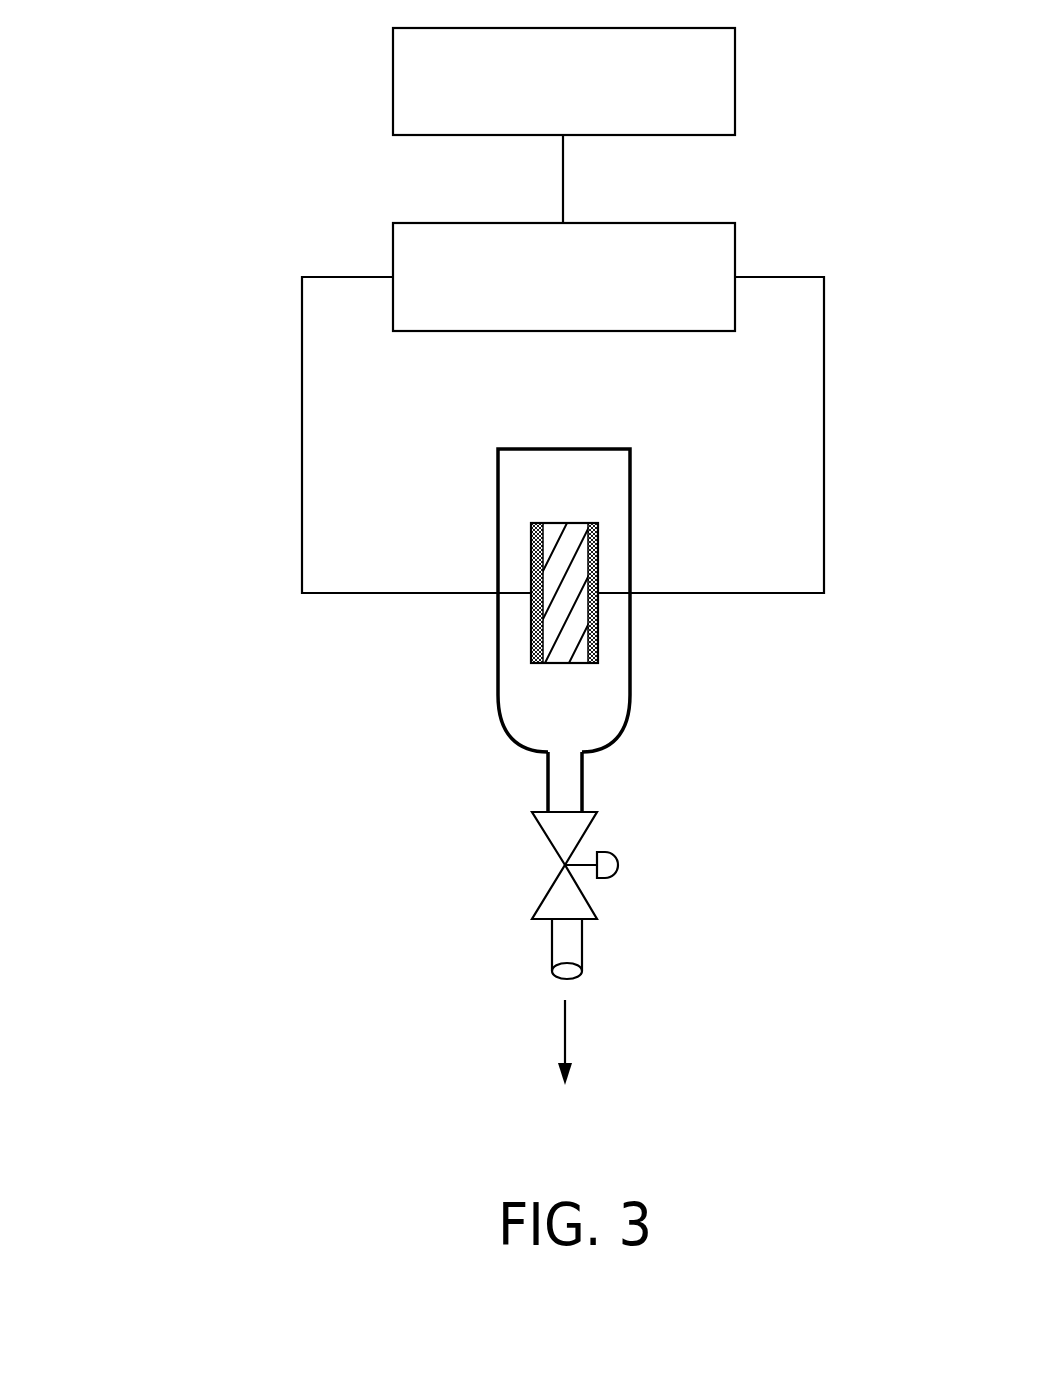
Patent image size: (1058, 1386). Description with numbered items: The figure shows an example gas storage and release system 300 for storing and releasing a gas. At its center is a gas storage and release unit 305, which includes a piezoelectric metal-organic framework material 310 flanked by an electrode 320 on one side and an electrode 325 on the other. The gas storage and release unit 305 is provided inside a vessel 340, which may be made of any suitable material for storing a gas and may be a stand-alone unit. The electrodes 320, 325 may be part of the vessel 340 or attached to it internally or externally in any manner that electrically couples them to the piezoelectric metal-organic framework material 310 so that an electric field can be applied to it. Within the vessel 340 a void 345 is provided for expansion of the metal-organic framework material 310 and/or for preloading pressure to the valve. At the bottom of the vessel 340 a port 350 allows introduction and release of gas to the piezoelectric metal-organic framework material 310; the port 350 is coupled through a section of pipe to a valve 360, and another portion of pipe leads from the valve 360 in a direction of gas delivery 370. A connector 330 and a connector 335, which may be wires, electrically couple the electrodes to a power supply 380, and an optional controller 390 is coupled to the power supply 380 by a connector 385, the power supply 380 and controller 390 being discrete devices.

The gas storage and release system 300 is at (178, 143).
The gas storage and release unit 305 is at (528, 494).
The piezoelectric metal-organic framework material 310 is at (556, 523).
The electrode 320 is at (531, 558).
The electrode 325 is at (598, 558).
The connector 330 is at (302, 425).
The connector 335 is at (824, 431).
The vessel 340 is at (508, 730).
The void 345 is at (580, 705).
The port 350 is at (582, 790).
The valve 360 is at (548, 897).
The direction of gas delivery 370 is at (565, 1035).
The power supply 380 is at (723, 321).
The connector 385 is at (563, 186).
The controller 390 is at (723, 127).